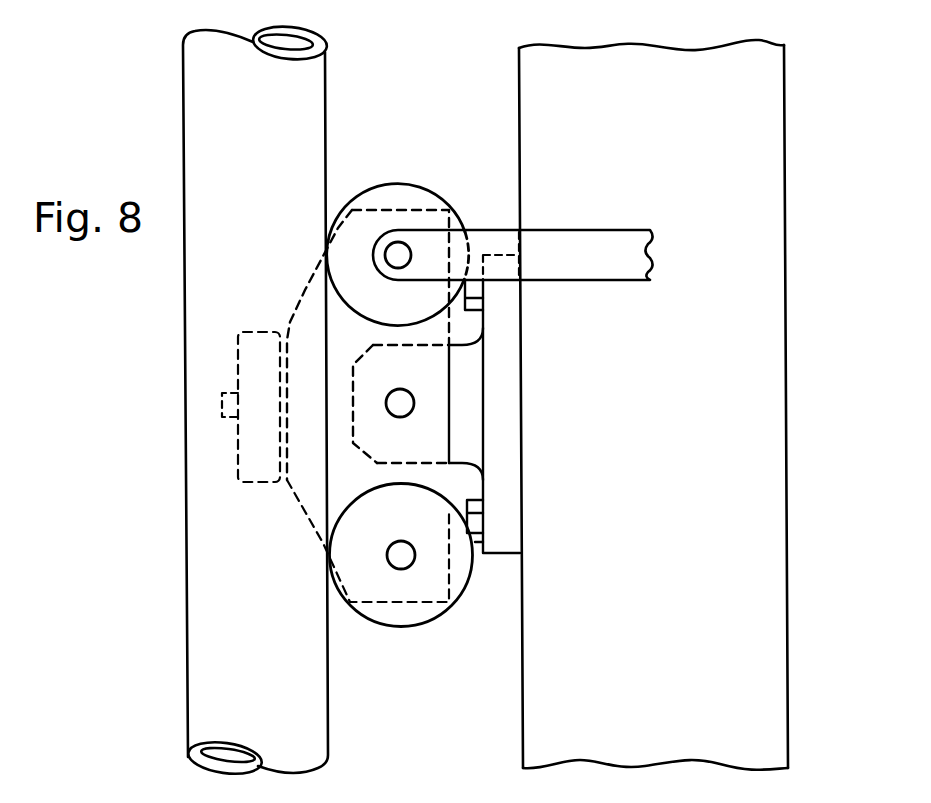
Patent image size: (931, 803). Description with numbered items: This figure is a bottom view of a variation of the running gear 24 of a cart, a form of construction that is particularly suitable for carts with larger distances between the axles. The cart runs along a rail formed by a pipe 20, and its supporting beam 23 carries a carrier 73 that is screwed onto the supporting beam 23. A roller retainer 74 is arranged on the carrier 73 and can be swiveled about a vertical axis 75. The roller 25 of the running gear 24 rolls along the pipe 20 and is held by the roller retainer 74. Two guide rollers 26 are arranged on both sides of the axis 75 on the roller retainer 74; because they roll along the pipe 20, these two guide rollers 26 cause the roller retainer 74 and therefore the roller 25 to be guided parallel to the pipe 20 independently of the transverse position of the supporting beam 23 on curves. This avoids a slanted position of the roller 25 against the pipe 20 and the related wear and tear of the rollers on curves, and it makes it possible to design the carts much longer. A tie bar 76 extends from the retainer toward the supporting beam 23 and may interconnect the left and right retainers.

The pipe 20 is at (210, 102).
The supporting beam 23 is at (762, 100).
The running gear 24 is at (430, 134).
The roller 25 is at (255, 353).
The guide roller 26 is at (383, 197).
The carrier 73 is at (353, 363).
The roller retainer 74 is at (337, 465).
The vertical axis 75 is at (400, 403).
The tie bar 76 is at (560, 247).